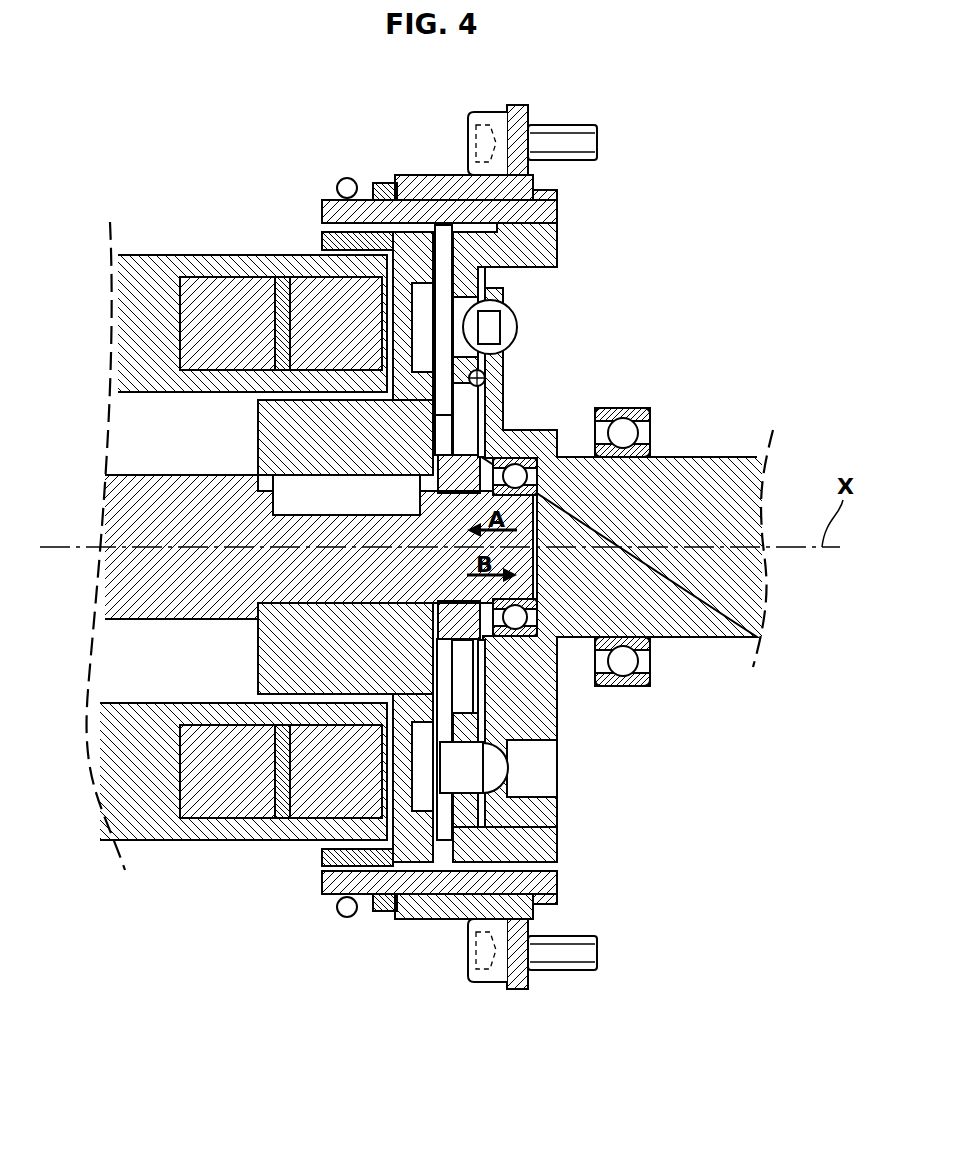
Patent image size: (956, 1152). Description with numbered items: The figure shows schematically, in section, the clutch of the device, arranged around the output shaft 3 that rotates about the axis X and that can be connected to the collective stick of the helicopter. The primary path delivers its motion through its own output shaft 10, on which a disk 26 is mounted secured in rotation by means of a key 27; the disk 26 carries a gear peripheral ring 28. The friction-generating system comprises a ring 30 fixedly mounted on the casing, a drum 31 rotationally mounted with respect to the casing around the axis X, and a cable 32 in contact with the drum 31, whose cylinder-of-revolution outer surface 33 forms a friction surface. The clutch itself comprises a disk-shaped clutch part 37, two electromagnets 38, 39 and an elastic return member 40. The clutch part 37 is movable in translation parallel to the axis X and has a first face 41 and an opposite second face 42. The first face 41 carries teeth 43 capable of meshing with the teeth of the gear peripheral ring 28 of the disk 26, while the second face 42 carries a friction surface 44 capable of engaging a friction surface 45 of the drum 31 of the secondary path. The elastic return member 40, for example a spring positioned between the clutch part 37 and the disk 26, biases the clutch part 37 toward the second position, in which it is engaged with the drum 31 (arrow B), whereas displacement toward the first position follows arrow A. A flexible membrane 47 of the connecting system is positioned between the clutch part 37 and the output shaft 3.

The output shaft 3 is at (700, 485).
The output shaft 10 is at (130, 514).
The disk 26 is at (455, 840).
The key 27 is at (345, 493).
The gear peripheral ring 28 is at (470, 855).
The ring 30 is at (445, 177).
The drum 31 is at (470, 208).
The cable 32 is at (347, 178).
The cylinder-of-revolution outer surface 33 is at (385, 183).
The clutch part 37 is at (497, 248).
The electromagnet 38 is at (148, 293).
The electromagnet 39 is at (128, 765).
The elastic return member 40 is at (433, 613).
The first face 41 is at (440, 663).
The second face 42 is at (480, 665).
The teeth 43 is at (425, 828).
The friction surface 44 is at (440, 833).
The friction surface 45 is at (490, 262).
The flexible membrane 47 is at (485, 393).